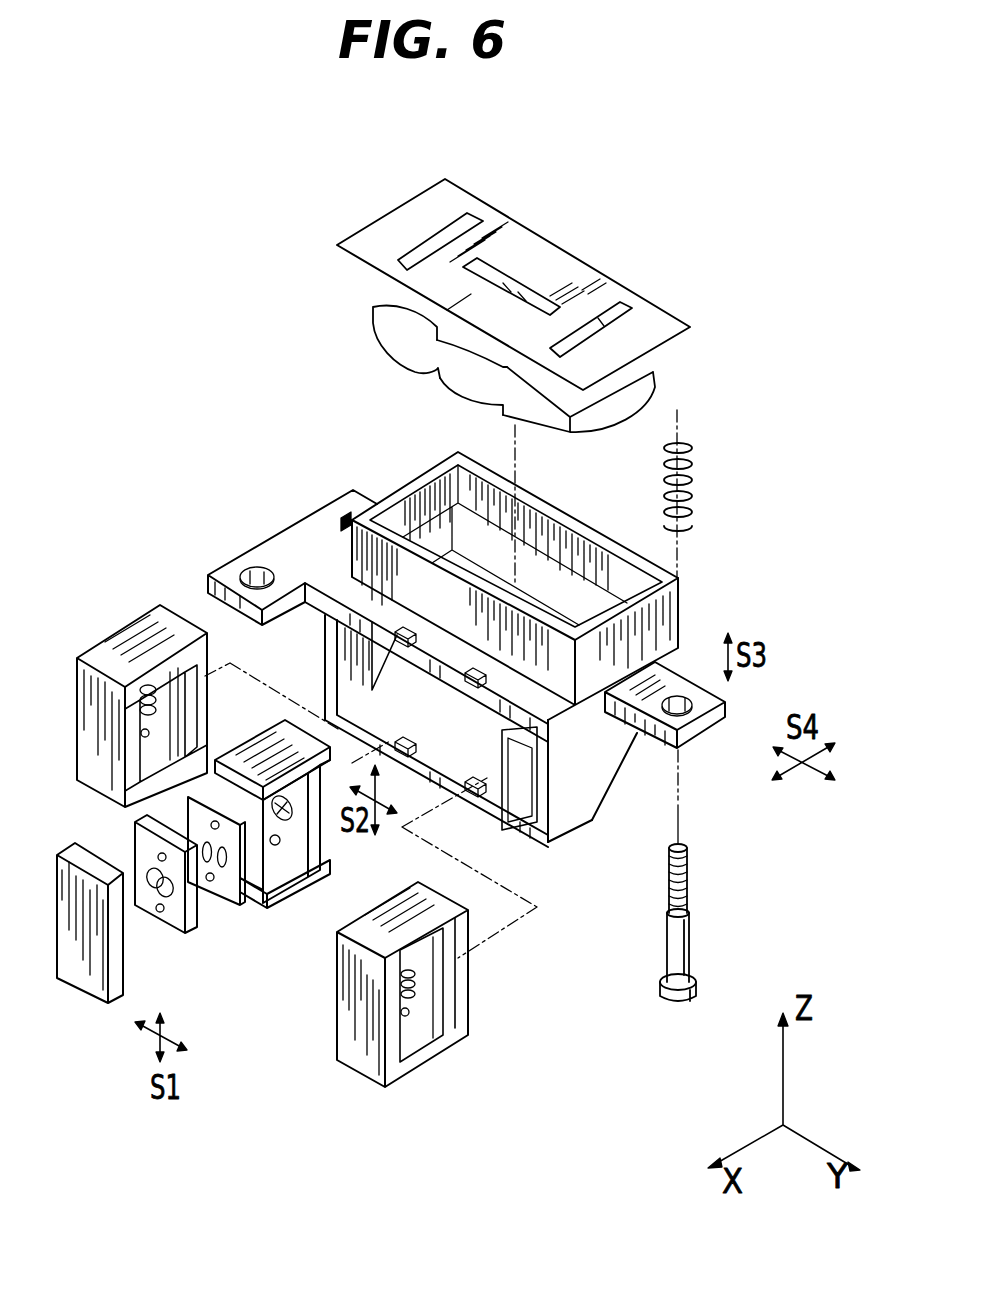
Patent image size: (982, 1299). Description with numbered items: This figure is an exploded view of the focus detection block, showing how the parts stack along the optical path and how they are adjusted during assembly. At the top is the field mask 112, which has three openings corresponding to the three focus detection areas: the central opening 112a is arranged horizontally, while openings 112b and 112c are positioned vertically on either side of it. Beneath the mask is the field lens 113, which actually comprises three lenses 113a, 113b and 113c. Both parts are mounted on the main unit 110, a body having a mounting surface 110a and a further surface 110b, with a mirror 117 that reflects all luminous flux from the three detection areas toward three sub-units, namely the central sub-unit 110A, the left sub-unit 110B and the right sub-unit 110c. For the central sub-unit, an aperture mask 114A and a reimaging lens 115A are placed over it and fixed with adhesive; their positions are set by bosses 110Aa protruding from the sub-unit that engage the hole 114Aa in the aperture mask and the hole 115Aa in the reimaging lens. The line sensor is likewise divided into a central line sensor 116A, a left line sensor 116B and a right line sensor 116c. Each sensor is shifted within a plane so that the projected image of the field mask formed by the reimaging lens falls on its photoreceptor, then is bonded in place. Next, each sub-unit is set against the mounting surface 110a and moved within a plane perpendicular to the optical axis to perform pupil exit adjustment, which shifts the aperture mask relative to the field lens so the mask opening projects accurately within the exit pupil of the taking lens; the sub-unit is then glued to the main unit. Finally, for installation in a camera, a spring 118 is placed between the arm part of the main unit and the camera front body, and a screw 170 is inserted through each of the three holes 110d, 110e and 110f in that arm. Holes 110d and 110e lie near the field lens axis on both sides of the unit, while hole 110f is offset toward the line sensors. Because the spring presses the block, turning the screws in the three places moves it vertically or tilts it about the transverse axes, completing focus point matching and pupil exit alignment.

The main unit 110 is at (476, 770).
The mounting surface 110a is at (455, 700).
The window opening 110b is at (336, 694).
The sub-unit 110c is at (506, 756).
The hole 110d is at (692, 710).
The hole 110e is at (347, 516).
The hole 110f is at (253, 572).
The sub-unit 110A is at (287, 880).
The boss 110Aa is at (282, 832).
The sub-unit 110B is at (152, 620).
The field mask 112 is at (515, 270).
The opening 112a is at (553, 305).
The opening 112b is at (470, 220).
The opening 112c is at (612, 322).
The field lens 113 is at (486, 373).
The lens 113a is at (471, 388).
The lens 113b is at (402, 350).
The lens 113c is at (560, 432).
The aperture mask 114A is at (230, 924).
The hole 114Aa is at (225, 868).
The reimaging lens 115A is at (124, 901).
The hole 115Aa is at (160, 855).
The line sensor 116A is at (90, 985).
The line sensor 116B is at (78, 700).
The line sensor 116c is at (354, 1057).
The mirror 117 is at (552, 780).
The spring 118 is at (690, 477).
The screw 170 is at (690, 940).